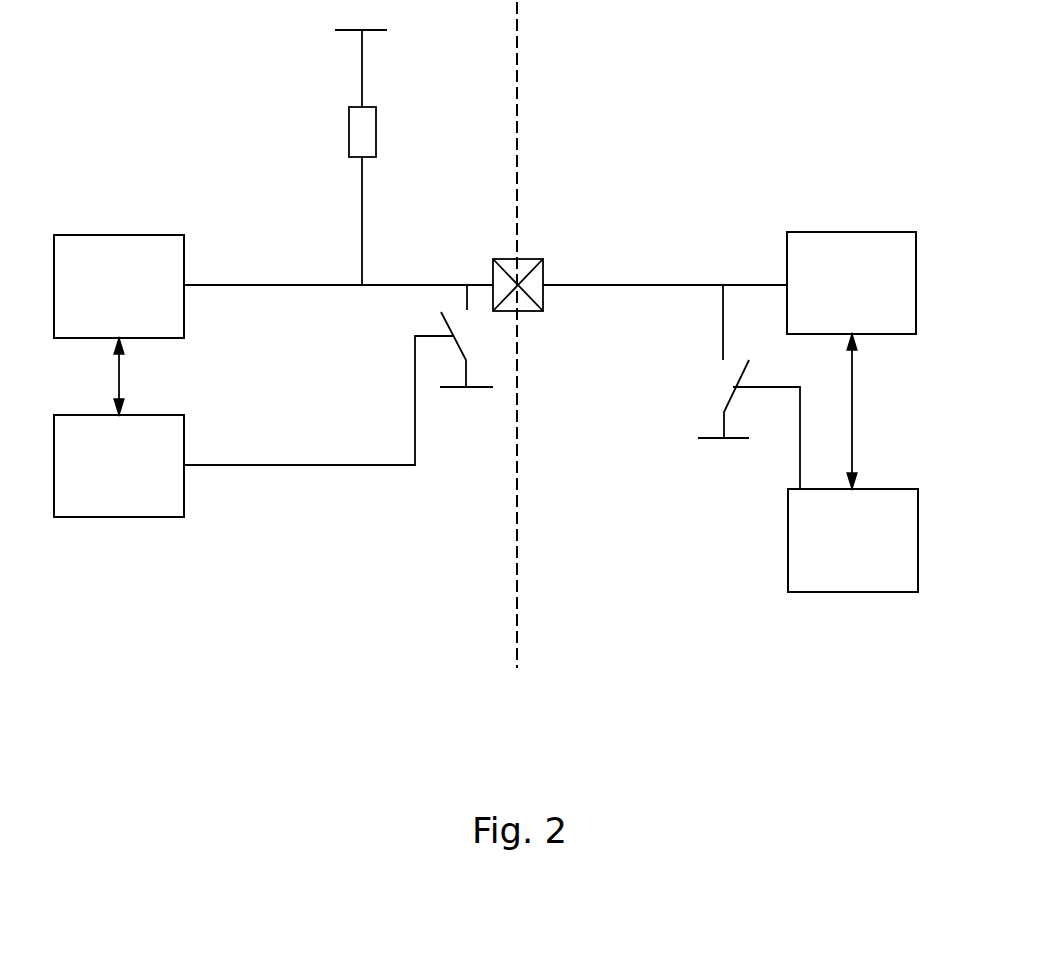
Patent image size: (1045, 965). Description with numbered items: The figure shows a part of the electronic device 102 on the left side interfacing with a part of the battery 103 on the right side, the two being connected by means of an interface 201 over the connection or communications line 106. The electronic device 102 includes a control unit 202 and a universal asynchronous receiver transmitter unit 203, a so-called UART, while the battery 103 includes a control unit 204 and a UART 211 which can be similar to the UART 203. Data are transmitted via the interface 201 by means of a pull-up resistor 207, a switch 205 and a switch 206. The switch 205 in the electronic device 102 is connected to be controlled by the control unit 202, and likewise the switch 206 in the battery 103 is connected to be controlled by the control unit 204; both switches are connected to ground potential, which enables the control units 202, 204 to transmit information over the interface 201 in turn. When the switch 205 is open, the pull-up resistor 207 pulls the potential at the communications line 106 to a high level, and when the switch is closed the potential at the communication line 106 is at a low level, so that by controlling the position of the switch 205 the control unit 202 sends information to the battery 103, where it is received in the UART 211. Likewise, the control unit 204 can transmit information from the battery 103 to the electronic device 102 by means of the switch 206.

The electronic device 102 is at (325, 653).
The battery 103 is at (710, 653).
The communication line 106 is at (406, 285).
The interface 201 is at (542, 255).
The control unit 202 is at (148, 517).
The universal asynchronous receiver transmitter unit 203 is at (97, 233).
The control unit 204 is at (878, 489).
The switch 205 is at (467, 335).
The switch 206 is at (723, 387).
The pull-up resistor 207 is at (376, 132).
The UART 211 is at (850, 232).